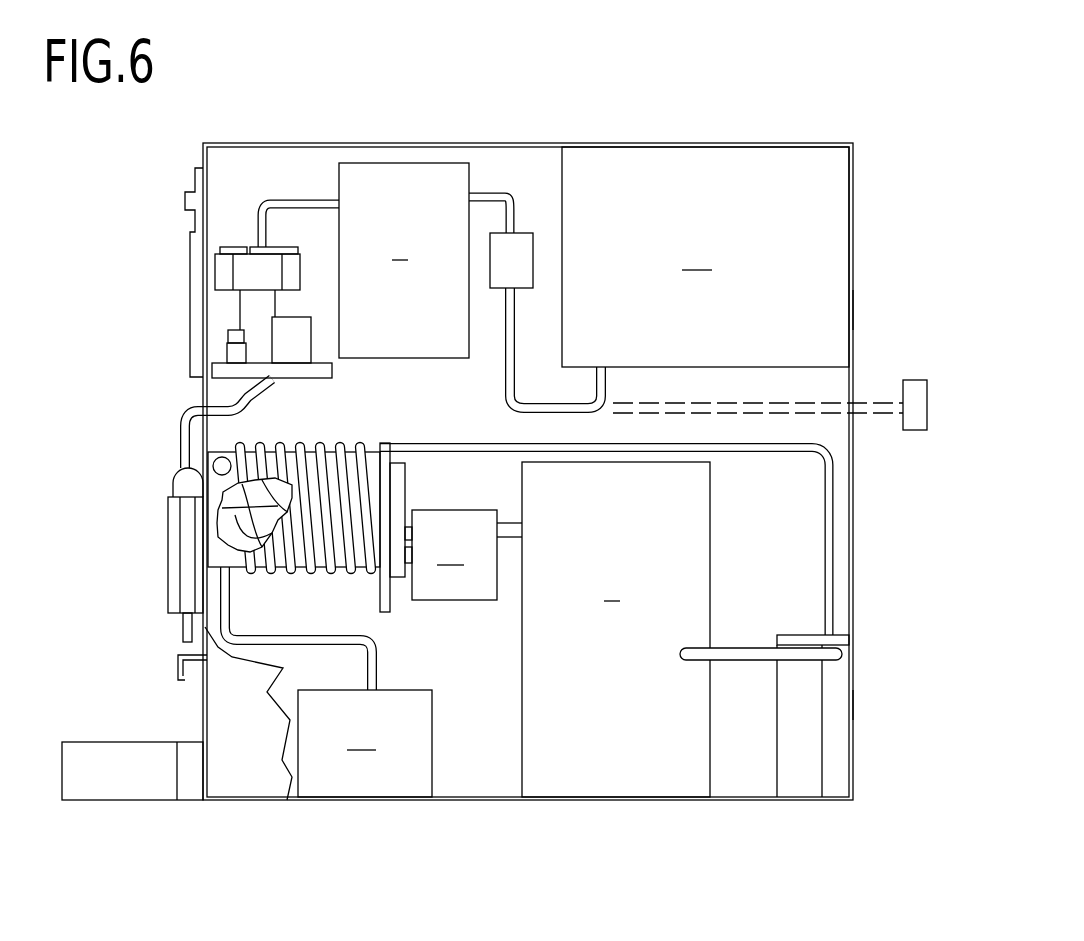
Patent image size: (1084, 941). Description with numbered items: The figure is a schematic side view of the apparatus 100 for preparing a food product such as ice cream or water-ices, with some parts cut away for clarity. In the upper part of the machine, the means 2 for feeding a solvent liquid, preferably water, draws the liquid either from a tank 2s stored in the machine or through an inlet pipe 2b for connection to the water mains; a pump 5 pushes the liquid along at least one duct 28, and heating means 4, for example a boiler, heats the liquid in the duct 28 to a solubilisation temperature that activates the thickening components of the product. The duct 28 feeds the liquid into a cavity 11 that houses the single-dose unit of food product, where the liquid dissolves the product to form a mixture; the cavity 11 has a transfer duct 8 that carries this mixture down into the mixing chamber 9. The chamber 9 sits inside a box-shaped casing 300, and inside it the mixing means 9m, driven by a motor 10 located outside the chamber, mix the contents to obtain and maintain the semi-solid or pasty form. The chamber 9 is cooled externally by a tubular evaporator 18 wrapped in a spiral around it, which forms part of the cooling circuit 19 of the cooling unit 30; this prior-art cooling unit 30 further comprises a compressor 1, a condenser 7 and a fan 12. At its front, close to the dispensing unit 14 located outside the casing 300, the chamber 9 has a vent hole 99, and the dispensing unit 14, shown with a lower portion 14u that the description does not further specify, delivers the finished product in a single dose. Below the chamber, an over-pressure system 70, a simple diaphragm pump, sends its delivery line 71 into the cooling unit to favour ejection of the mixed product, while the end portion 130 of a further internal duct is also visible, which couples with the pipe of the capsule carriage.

The apparatus 100 is at (733, 114).
The means for feeding a solvent liquid 2 is at (795, 200).
The tank 2s is at (705, 257).
The box-shaped casing 300 is at (853, 310).
The inlet pipe 2b is at (920, 410).
The heating means 4 is at (404, 260).
The duct 28 is at (288, 200).
The pump 5 is at (517, 252).
The cavity 11 is at (216, 263).
The transfer duct 8 is at (183, 437).
The vent hole 99 is at (213, 470).
The dispensing unit 14 is at (165, 538).
The mixing chamber 9 is at (218, 553).
The mixing means 9m is at (268, 505).
The evaporator 18 is at (253, 573).
The filter dryer lower part 14u is at (185, 647).
The end portion 130 is at (178, 680).
The delivery line 71 is at (268, 642).
The over-pressure system 70 is at (365, 743).
The motor 10 is at (451, 527).
The compressor 1 is at (616, 629).
The cooling circuit 19 is at (836, 572).
The fan 12 is at (790, 760).
The condenser 7 is at (840, 756).
The cooling unit 30 is at (864, 704).